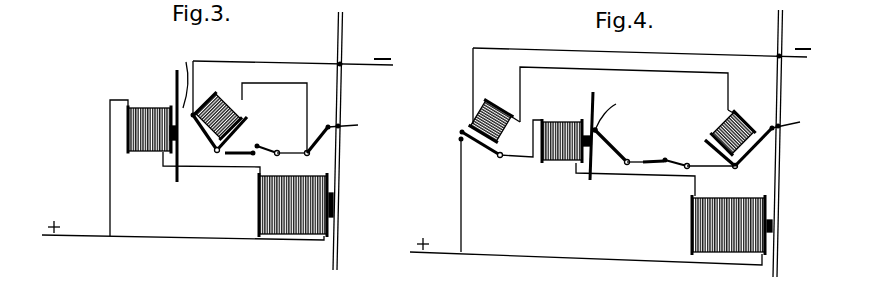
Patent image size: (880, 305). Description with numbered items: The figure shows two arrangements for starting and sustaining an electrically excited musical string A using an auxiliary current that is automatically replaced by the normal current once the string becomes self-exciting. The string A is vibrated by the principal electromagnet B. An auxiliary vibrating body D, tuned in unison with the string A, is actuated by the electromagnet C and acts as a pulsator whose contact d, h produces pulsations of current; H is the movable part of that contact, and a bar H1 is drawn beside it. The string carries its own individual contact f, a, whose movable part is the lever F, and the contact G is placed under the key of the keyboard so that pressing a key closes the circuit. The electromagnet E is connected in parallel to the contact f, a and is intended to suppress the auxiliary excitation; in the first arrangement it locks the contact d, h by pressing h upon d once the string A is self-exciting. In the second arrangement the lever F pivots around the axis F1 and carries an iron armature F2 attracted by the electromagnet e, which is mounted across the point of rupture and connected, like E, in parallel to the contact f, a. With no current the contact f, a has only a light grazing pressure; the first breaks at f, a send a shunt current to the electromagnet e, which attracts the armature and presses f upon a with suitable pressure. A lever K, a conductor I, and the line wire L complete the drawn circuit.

In FIG. 3, the string A is at (339, 164).
In FIG. 4, the string A is at (778, 170).
In FIG. 3, the electromagnet B is at (258, 202).
In FIG. 4, the electromagnet B is at (692, 223).
In FIG. 3, the electromagnet C is at (150, 152).
In FIG. 4, the electromagnet C is at (560, 162).
In FIG. 3, the auxiliary vibrating body D is at (175, 87).
In FIG. 4, the auxiliary vibrating body D is at (592, 92).
In FIG. 3, the contact d is at (186, 76).
In FIG. 4, the contact d is at (612, 108).
In FIG. 3, the electromagnet E is at (213, 97).
In FIG. 4, the electromagnet E is at (497, 103).
In FIG. 4, the electromagnet e is at (734, 108).
In FIG. 3, the movable contact lever F is at (320, 140).
In FIG. 4, the movable contact lever F is at (755, 144).
In FIG. 4, the axis F1 is at (728, 178).
In FIG. 4, the iron armature F2 is at (707, 138).
In FIG. 3, the contact f is at (327, 125).
In FIG. 4, the contact f is at (770, 125).
In FIG. 3, the contact G is at (276, 143).
In FIG. 4, the contact G is at (676, 157).
In FIG. 3, the movable contact part H is at (205, 135).
In FIG. 4, the movable contact part H is at (621, 153).
In FIG. 3, the contact bar H1 is at (239, 157).
In FIG. 3, the contact h is at (181, 132).
In FIG. 4, the contact h is at (600, 129).
In FIG. 4, the conductor I is at (459, 140).
In FIG. 4, the lever K is at (461, 129).
In FIG. 3, the line wire L is at (206, 240).
In FIG. 4, the line wire L is at (565, 259).
In FIG. 3, the contact a is at (350, 125).
In FIG. 4, the contact a is at (792, 119).